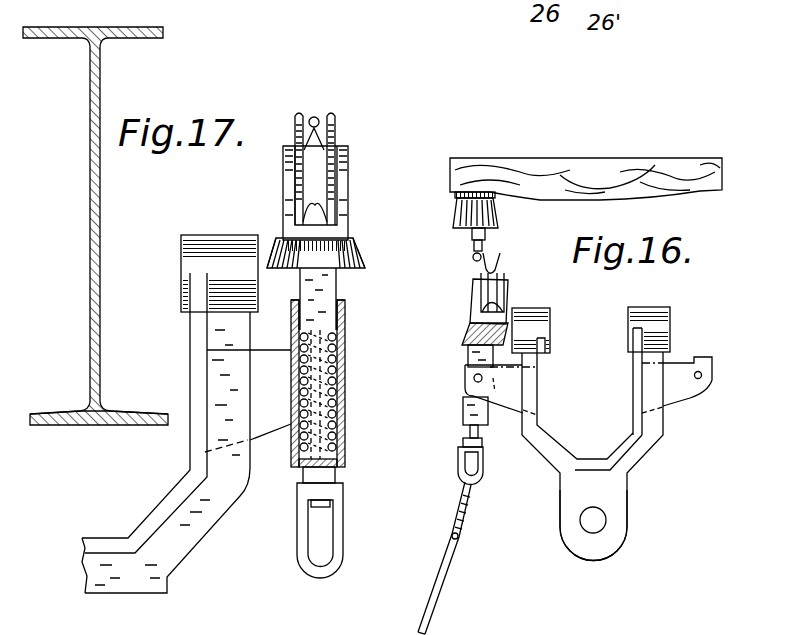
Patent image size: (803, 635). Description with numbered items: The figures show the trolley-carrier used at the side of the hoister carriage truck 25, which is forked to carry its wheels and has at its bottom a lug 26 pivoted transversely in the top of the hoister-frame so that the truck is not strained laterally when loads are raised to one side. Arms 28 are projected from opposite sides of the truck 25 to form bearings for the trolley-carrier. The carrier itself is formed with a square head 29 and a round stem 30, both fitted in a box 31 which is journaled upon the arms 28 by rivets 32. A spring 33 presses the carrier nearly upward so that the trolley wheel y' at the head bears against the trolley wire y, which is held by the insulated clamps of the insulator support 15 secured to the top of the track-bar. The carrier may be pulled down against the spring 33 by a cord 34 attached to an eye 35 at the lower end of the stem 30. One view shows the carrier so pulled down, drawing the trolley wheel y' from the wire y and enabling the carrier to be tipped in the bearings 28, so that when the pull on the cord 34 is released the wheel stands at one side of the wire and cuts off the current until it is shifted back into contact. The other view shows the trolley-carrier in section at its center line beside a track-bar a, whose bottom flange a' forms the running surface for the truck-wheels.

In FIG. 17, the track-bar section a is at (95, 226).
In FIG. 17, the bottom flange a' is at (99, 394).
In FIG. 16, the insulator support 15 is at (508, 158).
In FIG. 17, the hoister carriage truck 25 is at (190, 452).
In FIG. 16, the hoister carriage truck 25 is at (570, 449).
In FIG. 16, the lug 26 is at (628, 508).
In FIG. 16, the arms 28 is at (510, 396).
In FIG. 17, the square head 29 is at (334, 284).
In FIG. 17, the round stem 30 is at (341, 441).
In FIG. 17, the box 31 is at (347, 391).
In FIG. 16, the box 31 is at (468, 353).
In FIG. 17, the rivets 32 is at (341, 364).
In FIG. 17, the spring 33 is at (343, 337).
In FIG. 16, the cord 34 is at (433, 582).
In FIG. 17, the eye 35 is at (343, 536).
In FIG. 17, the trolley wire y is at (333, 96).
In FIG. 16, the trolley wire y is at (465, 231).
In FIG. 17, the trolley wheel y' is at (334, 176).
In FIG. 16, the trolley wheel y' is at (504, 282).